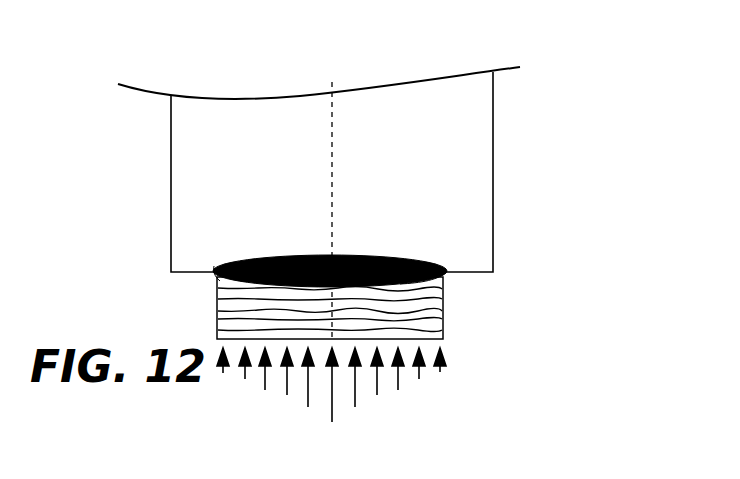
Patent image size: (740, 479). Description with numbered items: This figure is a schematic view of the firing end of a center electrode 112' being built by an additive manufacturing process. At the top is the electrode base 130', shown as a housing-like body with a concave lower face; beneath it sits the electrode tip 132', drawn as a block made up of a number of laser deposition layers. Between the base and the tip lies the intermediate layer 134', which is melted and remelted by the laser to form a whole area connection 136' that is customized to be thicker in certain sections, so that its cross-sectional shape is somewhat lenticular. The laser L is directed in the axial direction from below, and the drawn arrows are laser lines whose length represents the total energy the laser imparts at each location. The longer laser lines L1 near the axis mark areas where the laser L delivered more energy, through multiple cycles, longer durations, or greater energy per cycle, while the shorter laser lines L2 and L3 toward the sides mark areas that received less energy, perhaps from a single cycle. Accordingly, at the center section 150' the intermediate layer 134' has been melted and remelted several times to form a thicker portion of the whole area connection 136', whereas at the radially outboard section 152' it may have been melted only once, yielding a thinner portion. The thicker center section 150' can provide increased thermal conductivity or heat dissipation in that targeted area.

The center electrode 112' is at (319, 85).
The electrode base 130' is at (374, 205).
The electrode tip 132' is at (397, 314).
The intermediate layer 134' is at (510, 285).
The whole area connection 136' is at (423, 277).
The center section 150' is at (330, 252).
The radially outboard section 152' is at (164, 295).
The laser L is at (360, 404).
The laser lines L1 is at (355, 402).
The laser lines L2 is at (398, 383).
The laser lines L3 is at (440, 370).